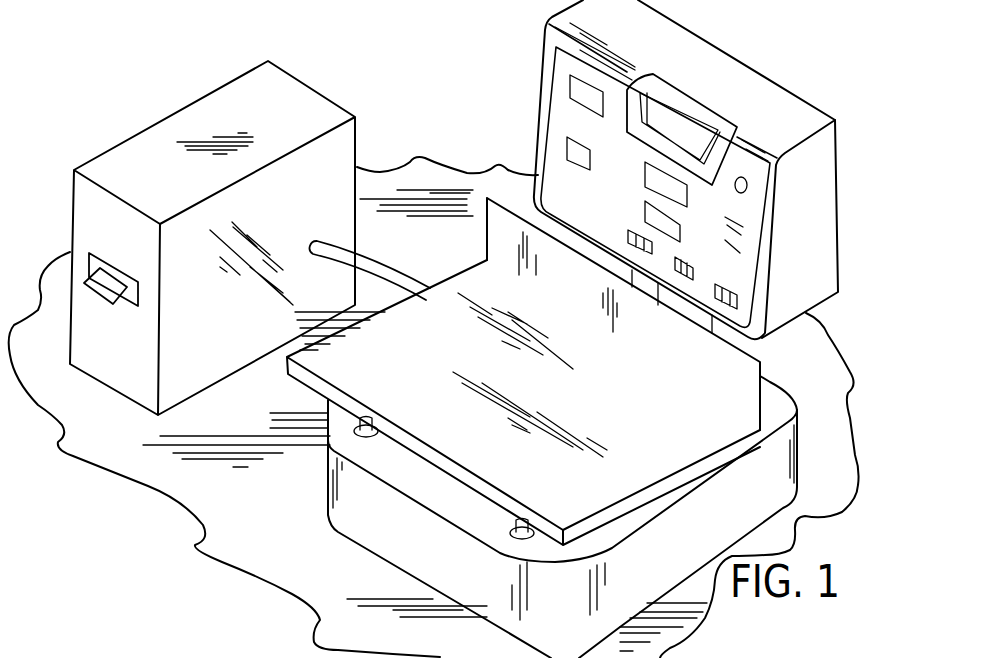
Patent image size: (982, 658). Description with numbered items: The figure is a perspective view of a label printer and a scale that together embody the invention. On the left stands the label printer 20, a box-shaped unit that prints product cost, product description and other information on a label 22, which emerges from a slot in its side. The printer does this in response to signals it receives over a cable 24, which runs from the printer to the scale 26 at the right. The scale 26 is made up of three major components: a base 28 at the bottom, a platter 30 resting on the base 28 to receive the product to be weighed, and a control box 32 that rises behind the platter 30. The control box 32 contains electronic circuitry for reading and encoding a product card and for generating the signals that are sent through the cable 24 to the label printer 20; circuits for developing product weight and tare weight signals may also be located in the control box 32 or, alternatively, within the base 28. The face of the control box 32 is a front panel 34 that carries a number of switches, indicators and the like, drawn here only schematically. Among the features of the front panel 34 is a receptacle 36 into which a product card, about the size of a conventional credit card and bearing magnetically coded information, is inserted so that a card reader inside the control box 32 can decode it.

The label printer 20 is at (201, 112).
The label 22 is at (92, 282).
The cable 24 is at (374, 262).
The scale 26 is at (806, 373).
The base 28 is at (397, 554).
The platter 30 is at (697, 453).
The control box 32 is at (826, 192).
The front panel 34 is at (560, 101).
The receptacle 36 is at (683, 128).